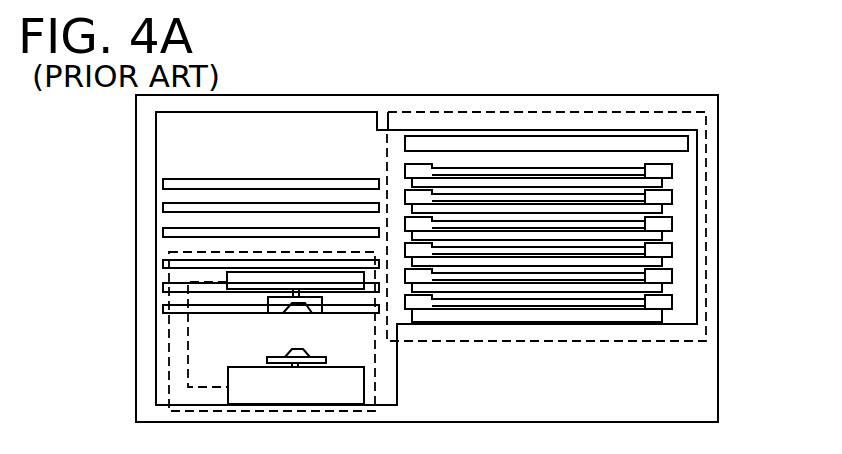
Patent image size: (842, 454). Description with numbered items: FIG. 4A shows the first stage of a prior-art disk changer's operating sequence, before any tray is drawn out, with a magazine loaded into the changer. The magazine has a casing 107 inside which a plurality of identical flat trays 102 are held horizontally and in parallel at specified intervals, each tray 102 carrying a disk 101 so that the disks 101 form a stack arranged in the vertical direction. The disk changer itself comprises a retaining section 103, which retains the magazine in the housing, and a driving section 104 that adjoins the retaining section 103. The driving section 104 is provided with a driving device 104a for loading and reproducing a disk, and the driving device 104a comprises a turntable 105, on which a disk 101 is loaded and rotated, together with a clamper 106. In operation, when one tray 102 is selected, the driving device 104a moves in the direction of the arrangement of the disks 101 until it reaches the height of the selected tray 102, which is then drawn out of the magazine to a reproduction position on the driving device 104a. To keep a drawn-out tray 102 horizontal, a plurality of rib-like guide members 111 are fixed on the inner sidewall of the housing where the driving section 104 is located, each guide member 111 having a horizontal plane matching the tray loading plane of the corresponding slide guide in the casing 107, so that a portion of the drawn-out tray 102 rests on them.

The disk 101 is at (502, 218).
The tray 102 is at (668, 172).
The retaining section 103 is at (400, 112).
The driving section 104 is at (167, 300).
The driving device 104a is at (186, 372).
The turntable 105 is at (292, 353).
The clamper 106 is at (317, 305).
The casing 107 is at (446, 148).
The guide member 111 is at (163, 185).